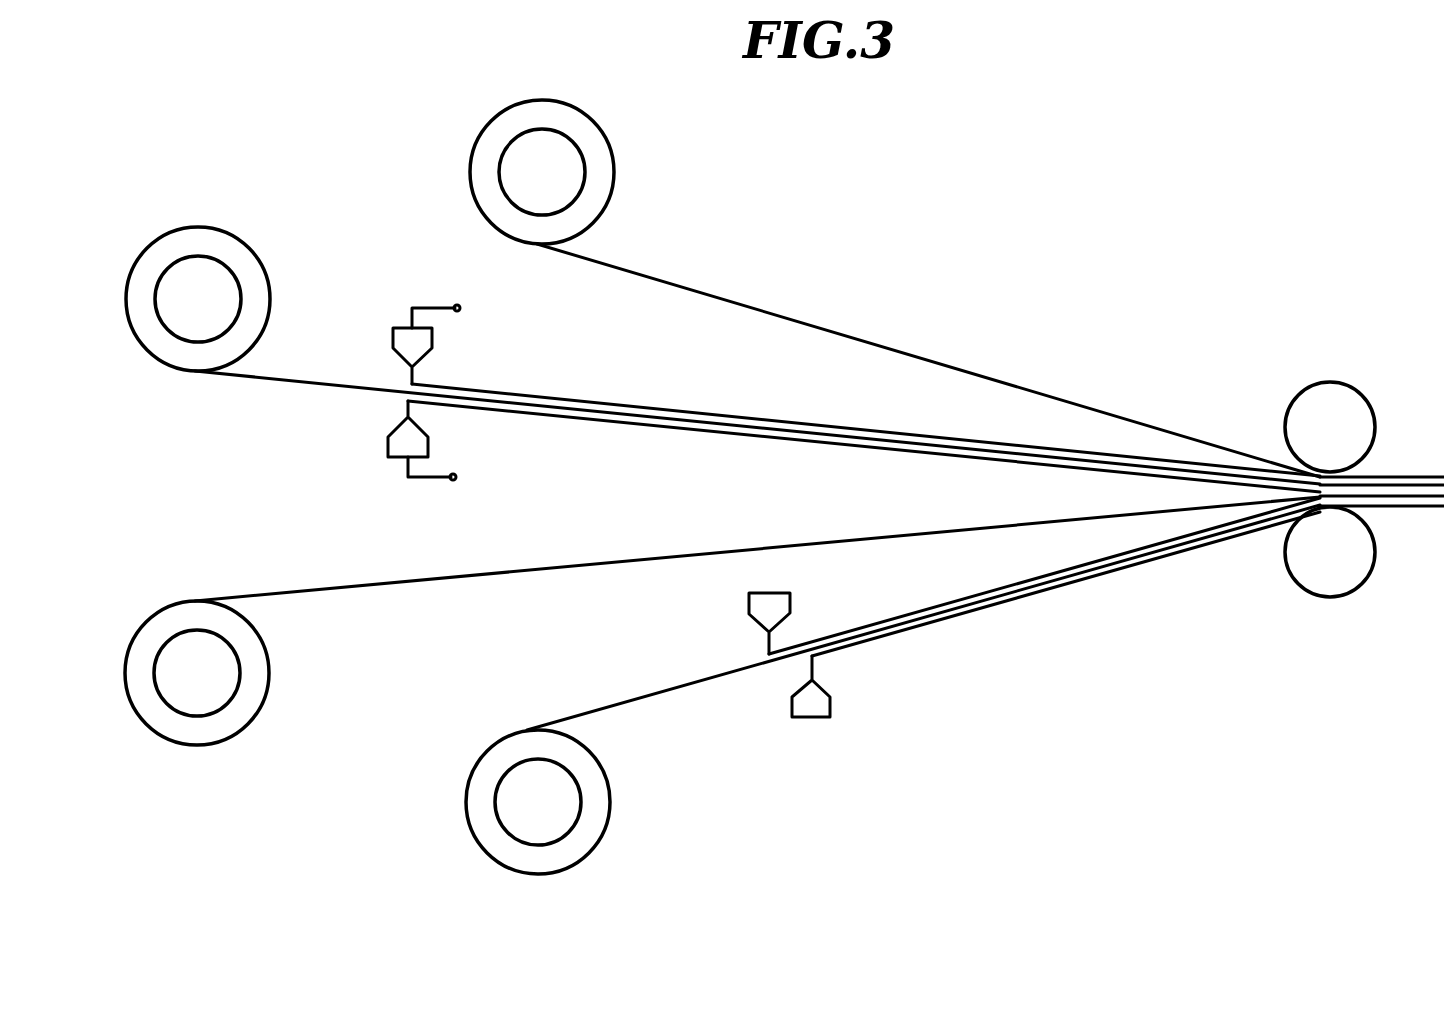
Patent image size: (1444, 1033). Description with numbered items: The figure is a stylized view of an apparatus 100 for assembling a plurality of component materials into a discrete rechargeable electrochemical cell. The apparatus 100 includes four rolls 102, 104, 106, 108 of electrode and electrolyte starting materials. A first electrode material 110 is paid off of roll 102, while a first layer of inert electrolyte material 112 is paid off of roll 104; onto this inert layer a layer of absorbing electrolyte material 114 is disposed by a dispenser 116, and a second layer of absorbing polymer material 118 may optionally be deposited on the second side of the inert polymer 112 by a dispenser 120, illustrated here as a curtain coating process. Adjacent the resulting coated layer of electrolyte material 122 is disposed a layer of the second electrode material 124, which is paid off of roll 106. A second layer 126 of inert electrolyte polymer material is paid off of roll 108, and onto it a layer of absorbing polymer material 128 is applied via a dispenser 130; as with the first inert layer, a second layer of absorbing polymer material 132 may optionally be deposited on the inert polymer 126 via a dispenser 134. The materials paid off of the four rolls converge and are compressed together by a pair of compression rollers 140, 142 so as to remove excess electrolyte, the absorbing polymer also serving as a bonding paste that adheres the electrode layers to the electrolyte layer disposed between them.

The apparatus 100 is at (1235, 860).
The roll 102 is at (598, 124).
The roll 104 is at (187, 227).
The roll 106 is at (167, 612).
The roll 108 is at (603, 827).
The first electrode material 110 is at (697, 288).
The first layer of inert electrolyte material 112 is at (293, 387).
The layer of absorbing electrolyte material 114 is at (618, 404).
The dispenser 116 is at (403, 343).
The lower coating layer on second web 118 is at (622, 426).
The dispenser 120 is at (405, 444).
The coated layer of electrolyte material 122 is at (733, 462).
The layer of second electrode material 124 is at (497, 575).
The second layer of inert electrolyte polymer material 126 is at (648, 700).
The layer of absorbing polymer material 128 is at (942, 605).
The dispenser 130 is at (767, 615).
The second layer of absorbing polymer material 132 is at (983, 612).
The dispenser 134 is at (812, 702).
The compression roller 140 is at (1357, 390).
The compression roller 142 is at (1353, 590).